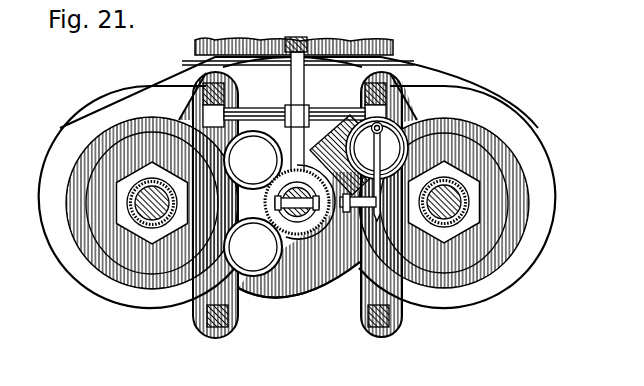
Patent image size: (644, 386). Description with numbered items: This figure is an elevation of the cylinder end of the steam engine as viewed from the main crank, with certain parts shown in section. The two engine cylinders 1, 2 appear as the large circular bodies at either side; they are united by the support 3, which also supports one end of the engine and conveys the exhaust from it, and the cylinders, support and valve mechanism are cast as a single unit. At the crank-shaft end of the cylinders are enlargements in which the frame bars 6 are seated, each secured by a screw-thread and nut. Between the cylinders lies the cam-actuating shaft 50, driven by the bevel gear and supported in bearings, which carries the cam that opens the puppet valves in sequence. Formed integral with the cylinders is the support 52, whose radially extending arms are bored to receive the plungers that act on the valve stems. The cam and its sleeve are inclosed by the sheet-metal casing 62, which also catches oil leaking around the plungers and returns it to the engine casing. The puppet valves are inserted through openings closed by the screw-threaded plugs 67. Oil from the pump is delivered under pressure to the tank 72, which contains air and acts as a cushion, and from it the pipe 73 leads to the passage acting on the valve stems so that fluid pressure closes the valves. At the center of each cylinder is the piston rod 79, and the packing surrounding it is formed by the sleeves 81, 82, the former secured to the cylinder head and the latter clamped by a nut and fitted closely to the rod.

The cylinder 1 is at (453, 283).
The cylinder 2 is at (135, 282).
The support 3 is at (163, 80).
The frame bars 6 is at (227, 92).
The cam-actuating shaft 50 is at (312, 284).
The support 52 is at (347, 290).
The sheet-metal casing 62 is at (288, 286).
The screw-threaded plugs 67 is at (255, 180).
The tank 72 is at (402, 115).
The pipe 73 is at (348, 130).
The piston rod 79 is at (132, 216).
The sleeve 81 is at (130, 200).
The sleeve 82 is at (133, 192).